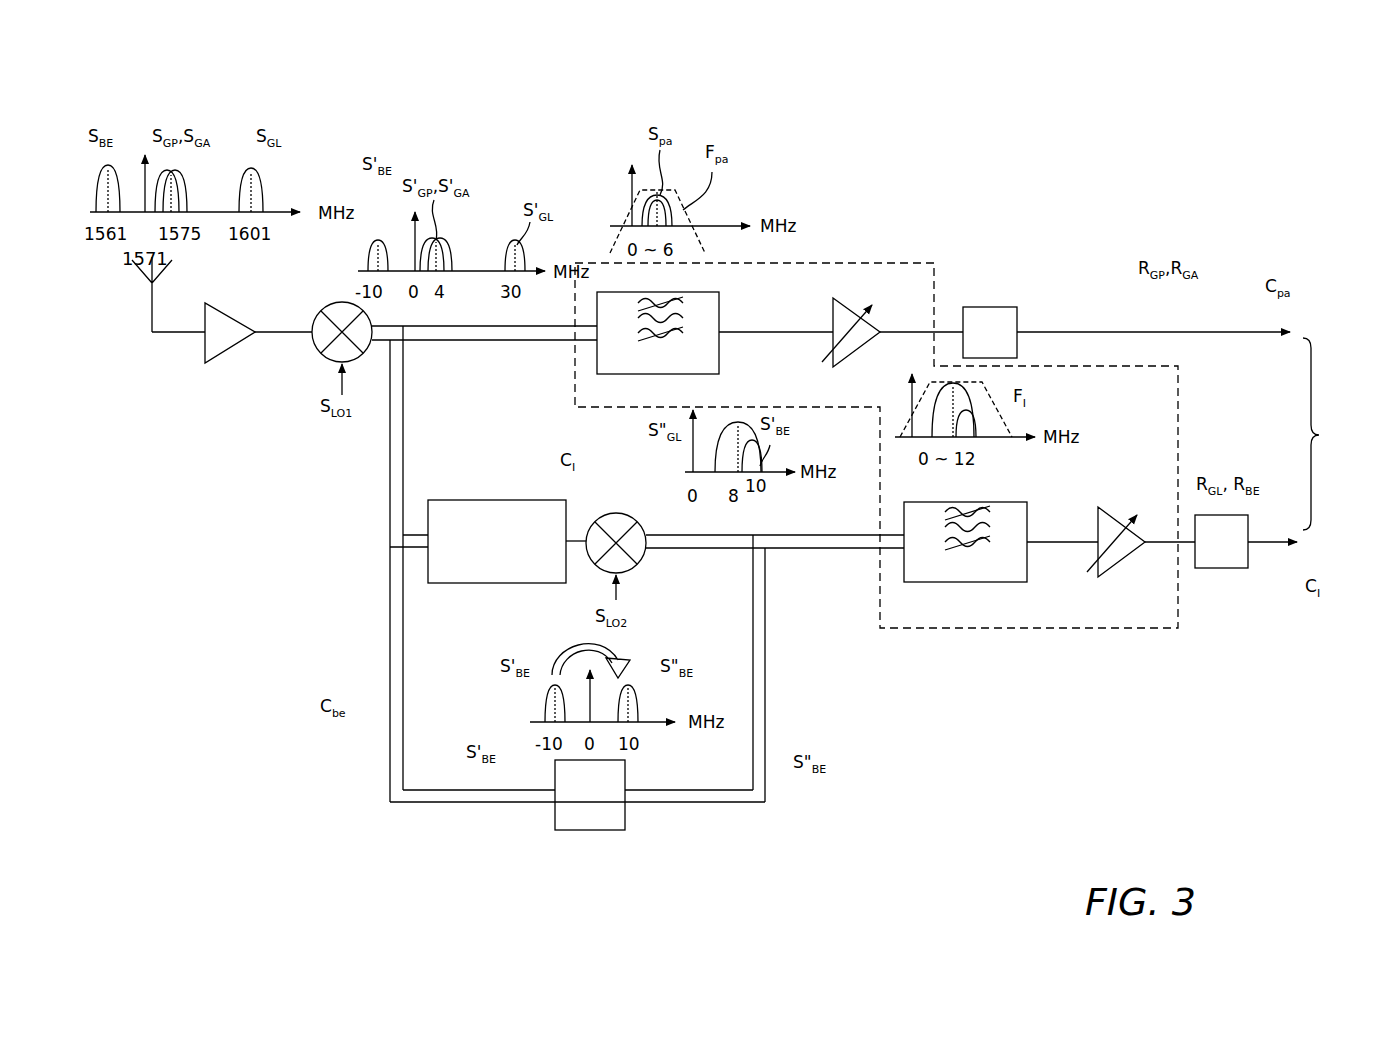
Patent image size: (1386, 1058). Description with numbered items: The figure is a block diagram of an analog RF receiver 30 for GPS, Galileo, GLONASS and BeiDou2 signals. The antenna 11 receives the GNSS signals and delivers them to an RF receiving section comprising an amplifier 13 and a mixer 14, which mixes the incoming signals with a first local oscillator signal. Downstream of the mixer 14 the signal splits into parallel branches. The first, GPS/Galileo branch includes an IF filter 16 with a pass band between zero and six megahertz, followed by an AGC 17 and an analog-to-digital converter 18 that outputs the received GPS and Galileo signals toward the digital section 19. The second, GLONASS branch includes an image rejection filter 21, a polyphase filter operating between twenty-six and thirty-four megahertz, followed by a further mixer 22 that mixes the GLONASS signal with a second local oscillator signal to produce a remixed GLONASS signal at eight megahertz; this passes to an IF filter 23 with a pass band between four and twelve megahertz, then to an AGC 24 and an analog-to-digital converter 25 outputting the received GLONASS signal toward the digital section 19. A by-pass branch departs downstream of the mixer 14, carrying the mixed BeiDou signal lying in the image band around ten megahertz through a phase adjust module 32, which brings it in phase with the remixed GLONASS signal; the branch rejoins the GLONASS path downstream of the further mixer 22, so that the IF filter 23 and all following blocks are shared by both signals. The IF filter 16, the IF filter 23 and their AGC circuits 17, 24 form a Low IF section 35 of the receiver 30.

The antenna 11 is at (147, 320).
The amplifier 13 is at (220, 347).
The mixer 14 is at (343, 312).
The IF filter 16 is at (710, 350).
The AGC 17 is at (838, 322).
The ADC 18 is at (990, 308).
The digital section 19 is at (1325, 434).
The image rejection filter 21 is at (508, 502).
The further mixer 22 is at (630, 562).
The IF filter 23 is at (970, 580).
The AGC 24 is at (1118, 552).
The ADC 25 is at (1222, 560).
The analog RF receiver 30 is at (1046, 180).
The phase adjust module 32 is at (612, 818).
The Low IF section 35 is at (1180, 436).